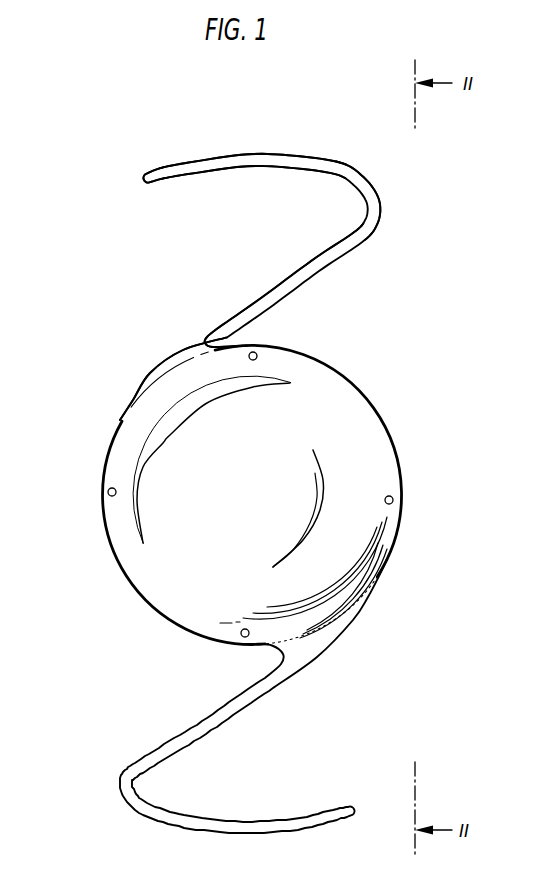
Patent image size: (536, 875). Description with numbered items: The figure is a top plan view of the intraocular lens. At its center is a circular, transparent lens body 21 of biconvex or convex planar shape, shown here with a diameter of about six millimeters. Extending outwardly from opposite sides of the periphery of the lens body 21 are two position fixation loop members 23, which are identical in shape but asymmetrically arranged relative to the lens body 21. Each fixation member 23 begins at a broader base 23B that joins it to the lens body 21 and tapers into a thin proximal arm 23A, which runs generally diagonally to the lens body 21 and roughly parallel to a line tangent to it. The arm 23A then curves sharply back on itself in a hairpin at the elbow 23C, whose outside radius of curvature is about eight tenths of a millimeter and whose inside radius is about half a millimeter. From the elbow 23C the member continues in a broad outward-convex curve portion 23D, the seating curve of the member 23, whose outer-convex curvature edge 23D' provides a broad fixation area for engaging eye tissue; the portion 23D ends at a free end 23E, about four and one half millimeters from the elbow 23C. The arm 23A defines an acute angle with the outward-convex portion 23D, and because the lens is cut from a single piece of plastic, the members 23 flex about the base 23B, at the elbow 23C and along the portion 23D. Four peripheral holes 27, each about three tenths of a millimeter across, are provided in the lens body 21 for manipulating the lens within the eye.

The lens body 21 is at (135, 595).
The position fixation loop member 23 is at (168, 278).
The proximal arm 23A is at (307, 258).
The base 23B is at (173, 350).
The elbow 23C is at (380, 203).
The outward-convex curve portion 23D is at (252, 191).
The outer-convex curvature edge 23D' is at (253, 133).
The free end 23E is at (145, 175).
The peripheral holes 27 is at (258, 355).